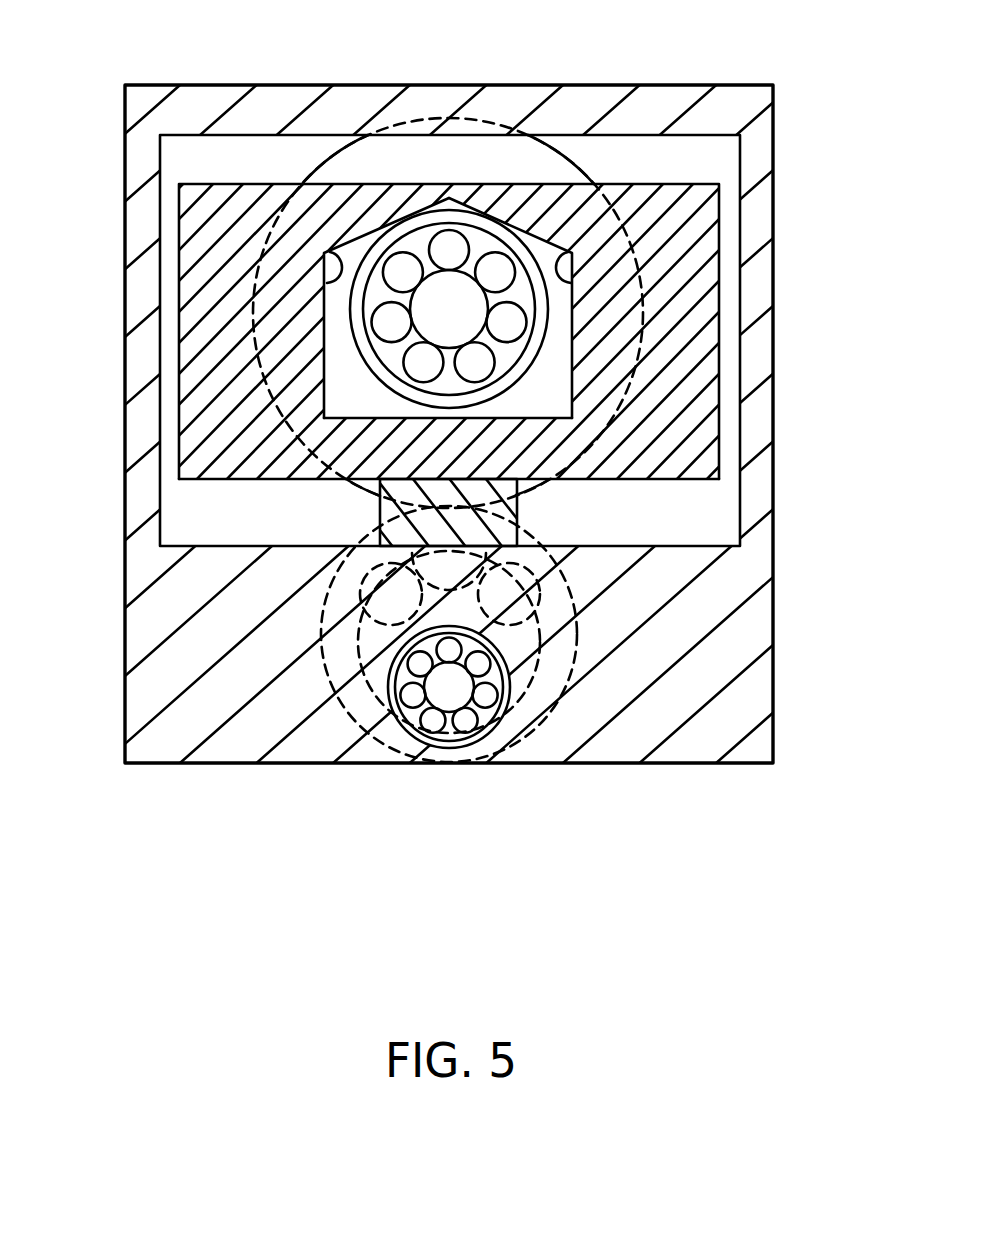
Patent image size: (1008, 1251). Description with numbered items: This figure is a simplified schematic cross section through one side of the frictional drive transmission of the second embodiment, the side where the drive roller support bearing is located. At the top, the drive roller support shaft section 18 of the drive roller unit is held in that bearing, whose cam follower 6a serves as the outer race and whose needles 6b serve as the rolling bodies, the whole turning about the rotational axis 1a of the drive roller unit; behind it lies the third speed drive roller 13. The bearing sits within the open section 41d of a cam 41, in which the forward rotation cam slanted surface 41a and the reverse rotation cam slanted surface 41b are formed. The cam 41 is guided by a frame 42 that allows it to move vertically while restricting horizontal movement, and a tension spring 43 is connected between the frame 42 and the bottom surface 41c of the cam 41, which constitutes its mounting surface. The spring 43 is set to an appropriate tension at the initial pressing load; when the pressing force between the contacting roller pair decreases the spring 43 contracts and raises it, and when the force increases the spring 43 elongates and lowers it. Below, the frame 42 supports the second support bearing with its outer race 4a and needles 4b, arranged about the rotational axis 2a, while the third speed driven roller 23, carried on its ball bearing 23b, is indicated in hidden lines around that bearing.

The rotational axis of the drive roller unit 1a is at (403, 209).
The third speed drive roller 13 is at (510, 160).
The drive roller support shaft section 18 is at (435, 330).
The cam follower 6a is at (540, 323).
The needles 6b is at (482, 373).
The cam 41 is at (708, 195).
The forward rotation cam slanted surface 41a is at (566, 274).
The reverse rotation cam slanted surface 41b is at (327, 277).
The bottom surface 41c is at (280, 478).
The open section 41d is at (343, 405).
The frame 42 is at (730, 585).
The tension spring 43 is at (517, 485).
The third speed driven roller 23 is at (380, 540).
The ball bearing 23b is at (330, 655).
The rotational axis of the driven roller unit 2a is at (449, 687).
The outer race 4a is at (497, 710).
The needles 4b is at (430, 717).